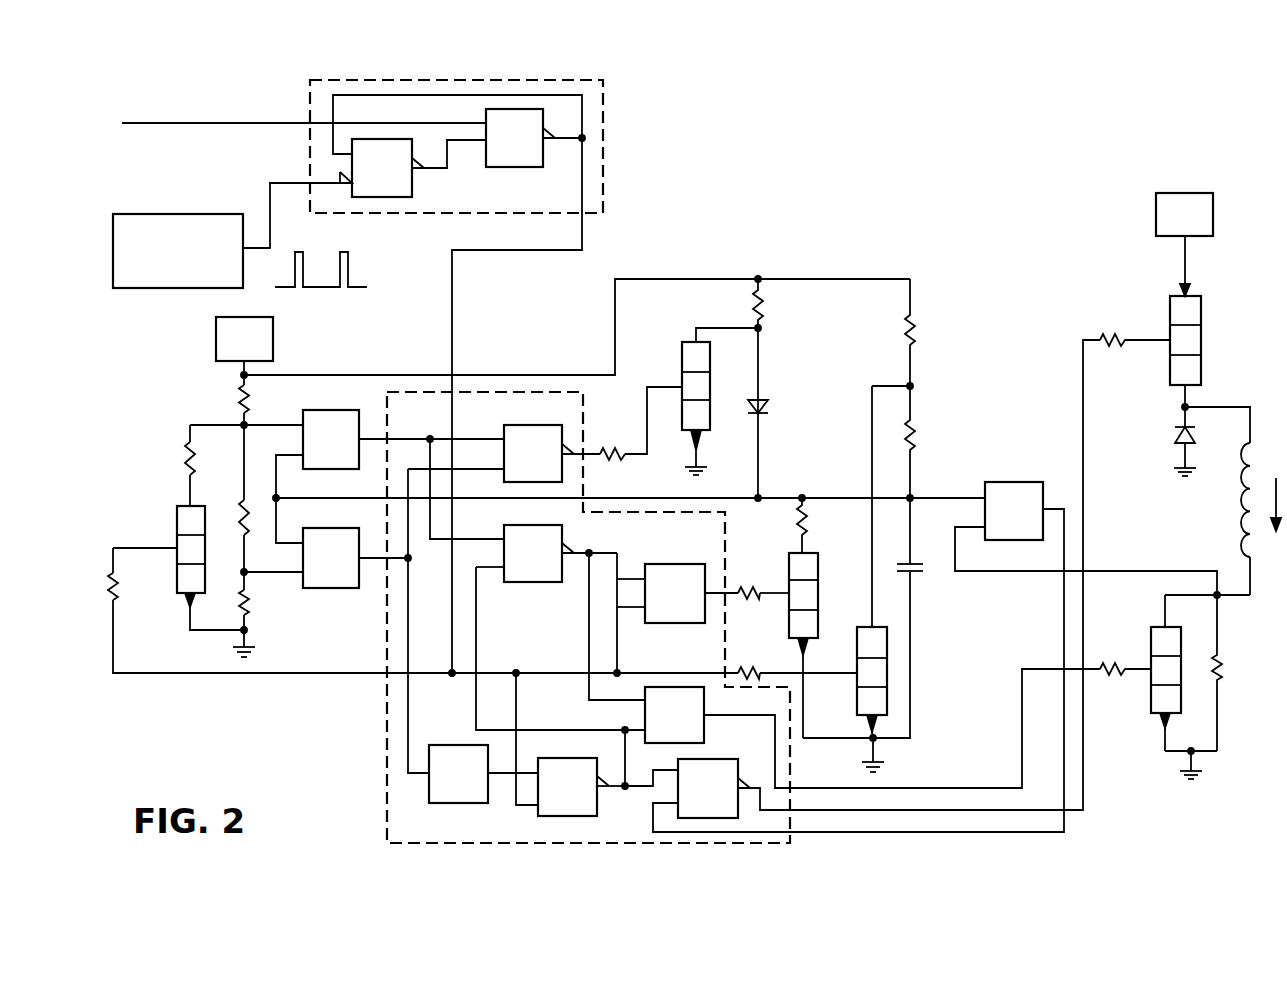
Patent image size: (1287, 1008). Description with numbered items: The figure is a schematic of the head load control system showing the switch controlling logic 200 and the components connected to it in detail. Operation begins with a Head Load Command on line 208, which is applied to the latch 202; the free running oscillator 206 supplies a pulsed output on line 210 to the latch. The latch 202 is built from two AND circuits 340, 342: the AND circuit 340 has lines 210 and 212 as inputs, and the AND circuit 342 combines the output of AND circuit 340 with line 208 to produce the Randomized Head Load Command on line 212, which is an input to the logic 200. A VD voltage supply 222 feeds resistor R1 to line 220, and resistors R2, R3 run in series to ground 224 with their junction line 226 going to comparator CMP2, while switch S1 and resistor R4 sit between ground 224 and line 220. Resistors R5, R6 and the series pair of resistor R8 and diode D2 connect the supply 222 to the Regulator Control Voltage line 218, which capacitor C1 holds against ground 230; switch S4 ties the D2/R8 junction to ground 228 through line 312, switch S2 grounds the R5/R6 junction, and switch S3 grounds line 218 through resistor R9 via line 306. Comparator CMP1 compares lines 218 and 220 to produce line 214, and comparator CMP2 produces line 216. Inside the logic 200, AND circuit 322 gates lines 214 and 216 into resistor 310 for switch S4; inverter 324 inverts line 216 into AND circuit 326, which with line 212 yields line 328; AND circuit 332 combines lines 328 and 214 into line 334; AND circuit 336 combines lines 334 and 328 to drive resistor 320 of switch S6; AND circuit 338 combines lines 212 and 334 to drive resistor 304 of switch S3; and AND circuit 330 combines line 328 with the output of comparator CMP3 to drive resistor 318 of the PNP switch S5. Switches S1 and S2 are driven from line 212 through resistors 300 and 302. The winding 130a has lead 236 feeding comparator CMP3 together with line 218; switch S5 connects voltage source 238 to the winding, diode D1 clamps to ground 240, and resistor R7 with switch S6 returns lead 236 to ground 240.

The switch controlling logic 200 is at (386, 743).
The latch 202 is at (604, 120).
The oscillator 206 is at (169, 213).
The Head Load Command line 208 is at (248, 124).
The oscillator output line 210 is at (270, 191).
The Randomized Head Load Command line 212 is at (582, 232).
The comparator CMP1 output line 214 is at (400, 444).
The comparator CMP2 output line 216 is at (371, 563).
The Regulator Control Voltage line 218 is at (962, 500).
The line 220 is at (190, 434).
The VD voltage supply 222 is at (276, 326).
The ground 224 is at (256, 650).
The line 226 is at (291, 574).
The ground 228 is at (706, 472).
The ground 230 is at (885, 765).
The supply lead 236 is at (1233, 598).
The voltage source 238 is at (1186, 192).
The ground 240 is at (1174, 473).
The resistor 300 is at (115, 600).
The resistor 302 is at (750, 656).
The resistor 304 is at (752, 574).
The line 306 is at (802, 541).
The resistor 310 is at (610, 450).
The line 312 is at (728, 329).
The resistor 318 is at (1112, 338).
The resistor 320 is at (1112, 667).
The AND circuit 322 is at (548, 425).
The inverter 324 is at (471, 807).
The AND circuit 326 is at (557, 763).
The line 328 is at (476, 644).
The AND circuit 330 is at (740, 770).
The AND circuit 332 is at (531, 584).
The line 334 is at (591, 610).
The AND circuit 336 is at (704, 735).
The AND circuit 338 is at (688, 564).
The AND circuit 340 is at (412, 188).
The AND circuit 342 is at (520, 168).
The winding 130a is at (1250, 550).
The resistor R1 is at (240, 398).
The resistor R2 is at (241, 527).
The resistor R3 is at (261, 618).
The resistor R4 is at (206, 474).
The resistor R5 is at (927, 332).
The resistor R6 is at (927, 440).
The resistor R7 is at (1222, 668).
The resistor R8 is at (776, 302).
The resistor R9 is at (820, 524).
The switch S1 is at (177, 530).
The switch S2 is at (857, 692).
The switch S3 is at (818, 580).
The switch S4 is at (710, 368).
The switch S5 is at (1201, 329).
The switch S6 is at (1151, 708).
The capacitor C1 is at (915, 576).
The diode D1 is at (1176, 434).
The diode D2 is at (768, 404).
The comparator CMP1 is at (317, 476).
The comparator CMP2 is at (331, 559).
The comparator CMP3 is at (1014, 512).